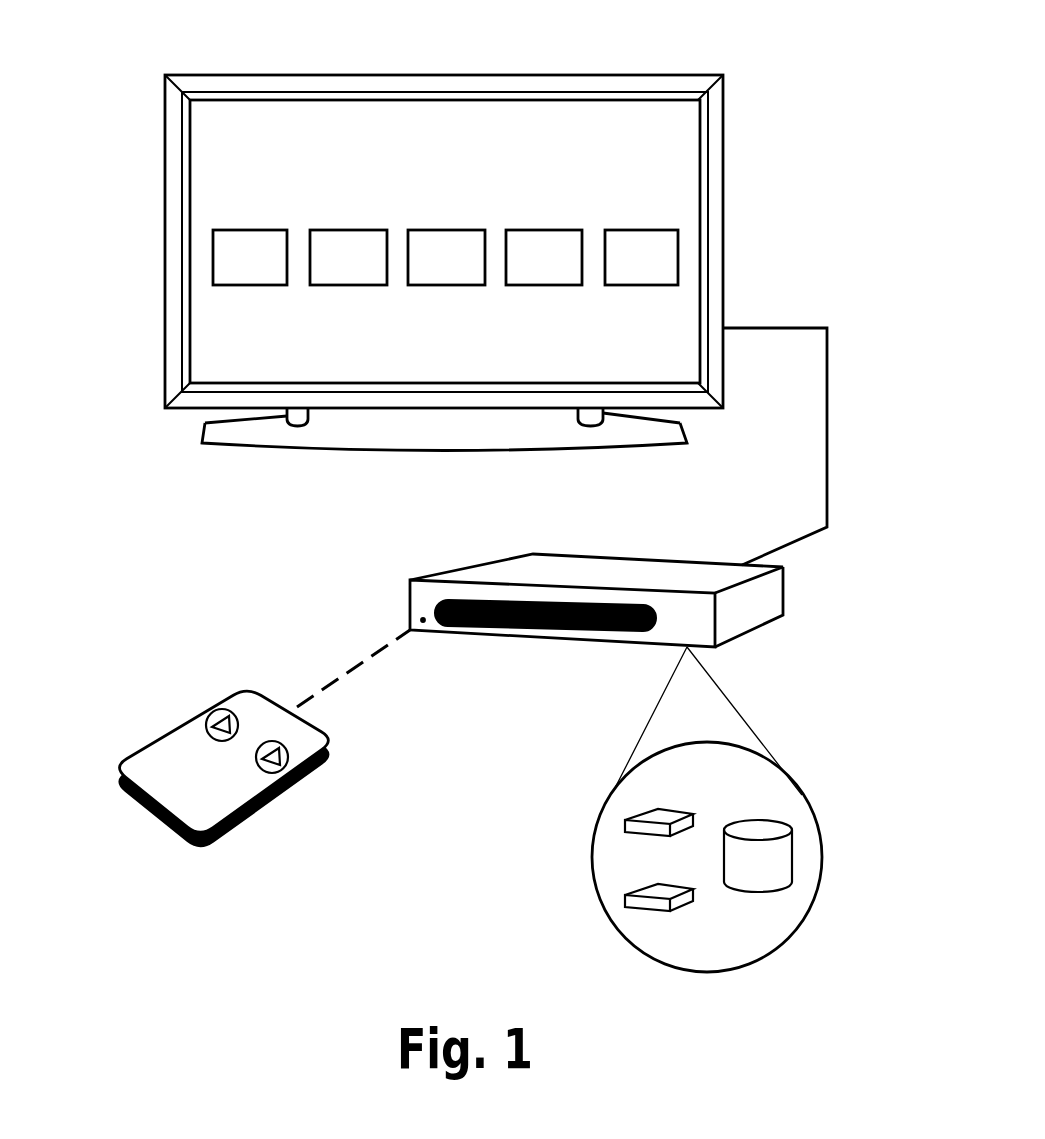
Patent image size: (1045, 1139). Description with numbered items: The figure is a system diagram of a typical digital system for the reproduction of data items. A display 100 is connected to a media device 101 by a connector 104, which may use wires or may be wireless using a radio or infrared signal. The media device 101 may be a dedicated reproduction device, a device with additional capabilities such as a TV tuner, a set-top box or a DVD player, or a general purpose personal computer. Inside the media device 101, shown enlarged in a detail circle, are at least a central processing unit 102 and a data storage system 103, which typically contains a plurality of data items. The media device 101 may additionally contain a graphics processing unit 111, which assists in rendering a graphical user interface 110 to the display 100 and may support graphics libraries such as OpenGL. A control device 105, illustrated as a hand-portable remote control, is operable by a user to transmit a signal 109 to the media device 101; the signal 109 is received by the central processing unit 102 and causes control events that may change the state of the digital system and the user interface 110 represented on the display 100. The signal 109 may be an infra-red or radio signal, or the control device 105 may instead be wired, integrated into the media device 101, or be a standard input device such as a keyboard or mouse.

The display 100 is at (197, 68).
The graphical user interface 110 is at (610, 215).
The connector 104 is at (802, 322).
The media device 101 is at (790, 592).
The Central Processing Unit 102 is at (630, 805).
The data storage system 103 is at (772, 813).
The Graphics Processing Unit 111 is at (642, 913).
The control device 105 is at (167, 720).
The signal 109 is at (357, 655).